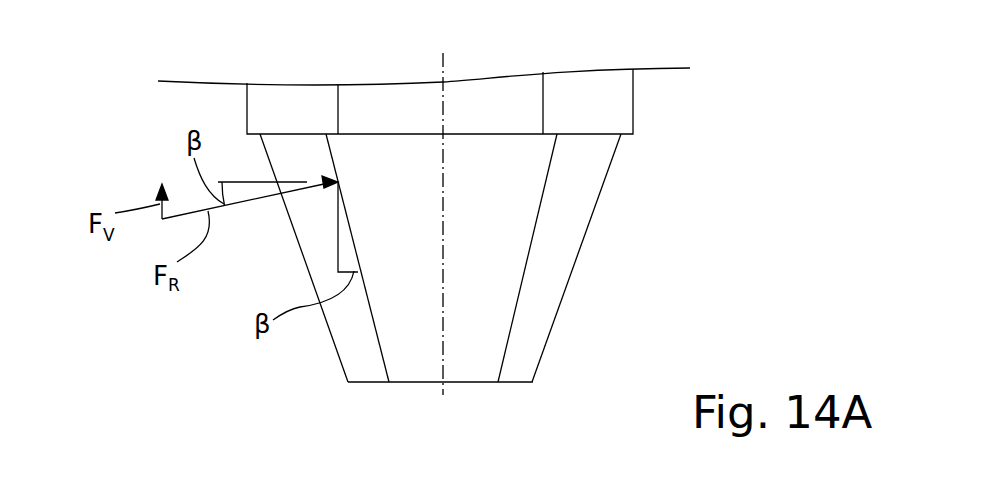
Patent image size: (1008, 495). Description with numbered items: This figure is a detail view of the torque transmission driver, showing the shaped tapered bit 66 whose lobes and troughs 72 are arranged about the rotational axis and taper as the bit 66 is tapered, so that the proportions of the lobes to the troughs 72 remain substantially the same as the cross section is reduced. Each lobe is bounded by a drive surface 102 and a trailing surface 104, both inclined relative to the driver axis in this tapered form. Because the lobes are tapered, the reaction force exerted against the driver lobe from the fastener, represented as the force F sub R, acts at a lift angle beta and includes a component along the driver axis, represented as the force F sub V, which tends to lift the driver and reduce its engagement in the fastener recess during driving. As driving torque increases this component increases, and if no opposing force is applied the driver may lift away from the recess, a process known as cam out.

The tapered bit 66 is at (131, 143).
The trough 72 is at (422, 352).
The drive surface 102 is at (373, 327).
The trailing surface 104 is at (523, 269).